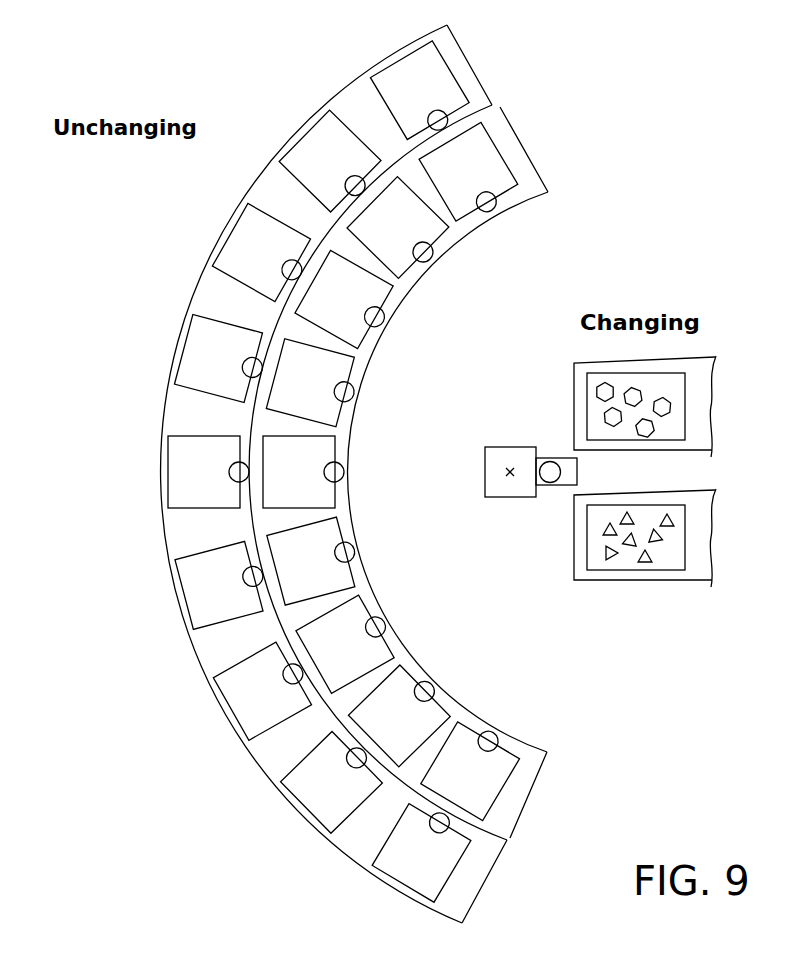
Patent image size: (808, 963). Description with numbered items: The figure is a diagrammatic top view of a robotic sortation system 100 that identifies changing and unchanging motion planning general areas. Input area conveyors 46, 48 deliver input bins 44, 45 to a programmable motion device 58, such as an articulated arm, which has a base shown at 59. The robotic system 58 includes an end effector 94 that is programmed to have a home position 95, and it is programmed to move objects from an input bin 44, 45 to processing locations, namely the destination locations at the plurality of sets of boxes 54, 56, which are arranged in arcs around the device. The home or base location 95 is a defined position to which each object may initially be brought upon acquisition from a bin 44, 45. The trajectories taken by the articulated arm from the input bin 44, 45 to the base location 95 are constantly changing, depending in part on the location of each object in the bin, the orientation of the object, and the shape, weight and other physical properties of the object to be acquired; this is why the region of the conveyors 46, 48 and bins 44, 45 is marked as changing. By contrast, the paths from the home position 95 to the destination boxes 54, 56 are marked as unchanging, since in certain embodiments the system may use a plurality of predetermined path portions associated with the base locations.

The robotic sortation system 100 is at (714, 182).
The set of boxes 54 is at (487, 63).
The set of boxes 56 is at (545, 137).
The input area conveyor 46 is at (700, 383).
The input bin 44 is at (677, 423).
The input area conveyor 48 is at (700, 513).
The input bin 45 is at (677, 553).
The programmable motion device 58 is at (488, 457).
The base 59 is at (510, 478).
The end effector 94 is at (567, 472).
The home position 95 is at (547, 461).